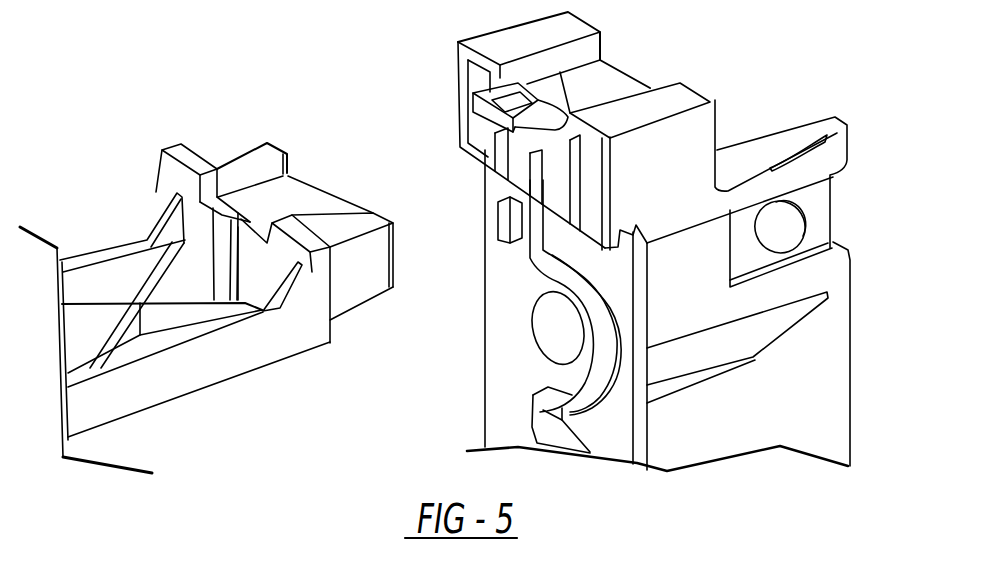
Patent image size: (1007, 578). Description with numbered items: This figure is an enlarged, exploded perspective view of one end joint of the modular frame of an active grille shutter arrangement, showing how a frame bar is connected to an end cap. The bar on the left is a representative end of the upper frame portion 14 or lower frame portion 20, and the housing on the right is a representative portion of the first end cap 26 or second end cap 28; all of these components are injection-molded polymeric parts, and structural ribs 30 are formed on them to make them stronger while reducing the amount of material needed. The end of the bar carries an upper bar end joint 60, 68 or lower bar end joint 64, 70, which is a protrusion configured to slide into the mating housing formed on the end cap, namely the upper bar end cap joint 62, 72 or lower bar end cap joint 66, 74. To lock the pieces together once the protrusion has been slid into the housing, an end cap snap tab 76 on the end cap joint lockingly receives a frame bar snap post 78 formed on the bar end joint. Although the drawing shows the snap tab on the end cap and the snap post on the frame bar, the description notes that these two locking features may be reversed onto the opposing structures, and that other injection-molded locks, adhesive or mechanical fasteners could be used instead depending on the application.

The upper frame portion 14 is at (206, 280).
The lower frame portion 20 is at (95, 273).
The first end cap 26 is at (658, 313).
The second end cap 28 is at (755, 425).
The structural ribs 30 is at (182, 320).
The upper bar end joint 60 is at (221, 118).
The lower bar end joint 64 is at (221, 118).
The upper bar end joint 68 is at (221, 118).
The lower bar end joint 70 is at (242, 157).
The upper bar end cap joint 62 is at (626, 129).
The lower bar end cap joint 66 is at (626, 129).
The upper bar end cap joint 72 is at (626, 129).
The lower bar end cap joint 74 is at (568, 25).
The end cap snap tab 76 is at (530, 123).
The frame bar snap post 78 is at (245, 216).